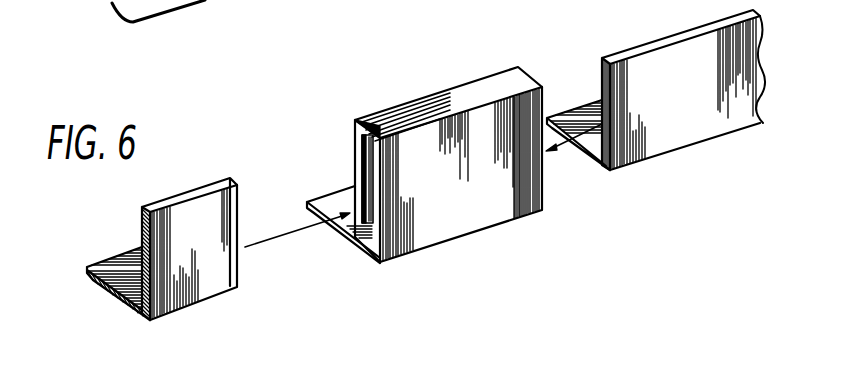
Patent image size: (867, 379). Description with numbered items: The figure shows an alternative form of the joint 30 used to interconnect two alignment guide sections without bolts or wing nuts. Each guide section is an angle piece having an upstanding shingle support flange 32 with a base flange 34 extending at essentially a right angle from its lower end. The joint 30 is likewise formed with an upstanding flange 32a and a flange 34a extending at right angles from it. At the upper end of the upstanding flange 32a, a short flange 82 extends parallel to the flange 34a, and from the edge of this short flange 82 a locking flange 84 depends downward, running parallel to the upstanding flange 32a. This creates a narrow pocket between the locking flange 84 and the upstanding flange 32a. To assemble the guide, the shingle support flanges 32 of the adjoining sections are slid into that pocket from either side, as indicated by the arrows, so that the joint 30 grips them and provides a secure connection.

The joint 30 is at (492, 210).
The shingle support flange 32 is at (190, 191).
The upstanding flange 32a is at (535, 193).
The base flange 34 is at (115, 267).
The flange 34a is at (322, 207).
The short flange 82 is at (380, 119).
The locking flange 84 is at (357, 154).